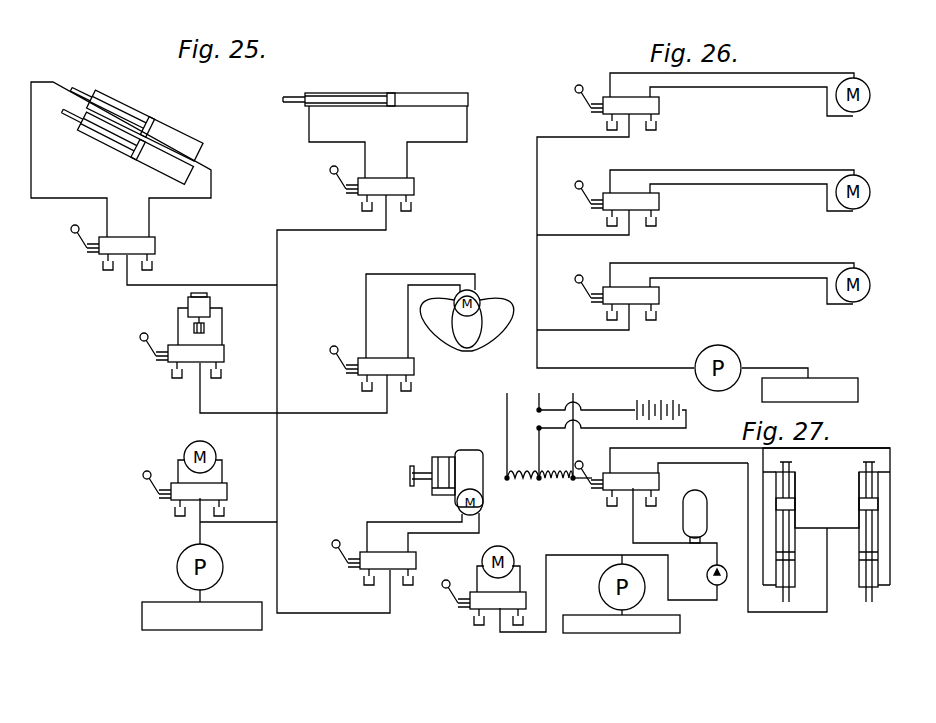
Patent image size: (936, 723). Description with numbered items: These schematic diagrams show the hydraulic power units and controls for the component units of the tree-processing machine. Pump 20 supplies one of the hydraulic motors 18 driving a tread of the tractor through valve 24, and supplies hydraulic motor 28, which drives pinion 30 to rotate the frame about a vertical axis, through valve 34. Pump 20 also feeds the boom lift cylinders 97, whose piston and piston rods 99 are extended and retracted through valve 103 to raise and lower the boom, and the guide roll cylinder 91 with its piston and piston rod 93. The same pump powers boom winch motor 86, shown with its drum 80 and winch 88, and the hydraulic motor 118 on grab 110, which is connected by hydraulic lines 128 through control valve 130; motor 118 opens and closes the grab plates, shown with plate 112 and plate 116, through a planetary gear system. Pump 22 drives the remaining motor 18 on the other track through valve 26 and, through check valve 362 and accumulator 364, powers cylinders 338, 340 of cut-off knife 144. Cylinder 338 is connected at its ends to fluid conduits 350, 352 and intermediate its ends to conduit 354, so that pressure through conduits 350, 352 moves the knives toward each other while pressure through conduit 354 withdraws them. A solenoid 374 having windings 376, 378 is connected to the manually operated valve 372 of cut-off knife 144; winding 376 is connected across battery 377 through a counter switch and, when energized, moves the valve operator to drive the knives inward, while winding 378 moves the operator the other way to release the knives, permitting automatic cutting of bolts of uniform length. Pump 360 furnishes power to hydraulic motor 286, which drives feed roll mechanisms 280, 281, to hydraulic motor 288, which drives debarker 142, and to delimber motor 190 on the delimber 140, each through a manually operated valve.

In FIG. 25, the piston and piston rod 99 is at (76, 84).
In FIG. 25, the double acting cylinder 97 is at (180, 127).
In FIG. 25, the valve 103 is at (155, 250).
In FIG. 25, the piston and piston rod 93 is at (351, 94).
In FIG. 25, the guide roll cylinder 91 is at (434, 94).
In FIG. 25, the hydraulic motor 28 is at (184, 300).
In FIG. 25, the pinion 30 is at (204, 329).
In FIG. 25, the valve 34 is at (228, 354).
In FIG. 25, the hydraulic lines 128 is at (404, 300).
In FIG. 25, the control valve 130 is at (382, 358).
In FIG. 25, the hydraulic motor 118 is at (482, 299).
In FIG. 25, the plate 112 is at (438, 346).
In FIG. 25, the plate 116 is at (486, 346).
In FIG. 25, the grab 110 is at (468, 356).
In FIG. 25, the hydraulic motor 18 is at (214, 450).
In FIG. 25, the valve 24 is at (230, 488).
In FIG. 25, the pump 20 is at (180, 550).
In FIG. 25, the drum 80 is at (432, 455).
In FIG. 25, the winch 88 is at (470, 450).
In FIG. 25, the boom winch motor 86 is at (482, 508).
In FIG. 25, the valve 26 is at (460, 592).
In FIG. 25, the pump 22 is at (598, 582).
In FIG. 25, the battery 377 is at (668, 394).
In FIG. 25, the winding 376 is at (518, 492).
In FIG. 25, the winding 378 is at (556, 484).
In FIG. 25, the solenoid 374 is at (578, 484).
In FIG. 25, the manually operated valve 372 is at (650, 474).
In FIG. 25, the accumulator 364 is at (726, 484).
In FIG. 25, the check valve 362 is at (726, 598).
In FIG. 26, the feed roll mechanism 280 is at (830, 68).
In FIG. 26, the feed roll mechanism 281 is at (877, 50).
In FIG. 26, the hydraulic motor 286 is at (868, 110).
In FIG. 26, the debarker 142 is at (840, 160).
In FIG. 26, the hydraulic motor 288 is at (868, 207).
In FIG. 26, the conduit 140 is at (840, 258).
In FIG. 26, the delimber motor 190 is at (866, 302).
In FIG. 26, the pump 360 is at (732, 352).
In FIG. 27, the cut-off knife 144 is at (855, 448).
In FIG. 27, the fluid conduit 350 is at (854, 460).
In FIG. 27, the cylinder 340 is at (796, 488).
In FIG. 27, the cylinder 338 is at (858, 504).
In FIG. 27, the conduit 354 is at (838, 520).
In FIG. 27, the fluid conduit 352 is at (774, 588).